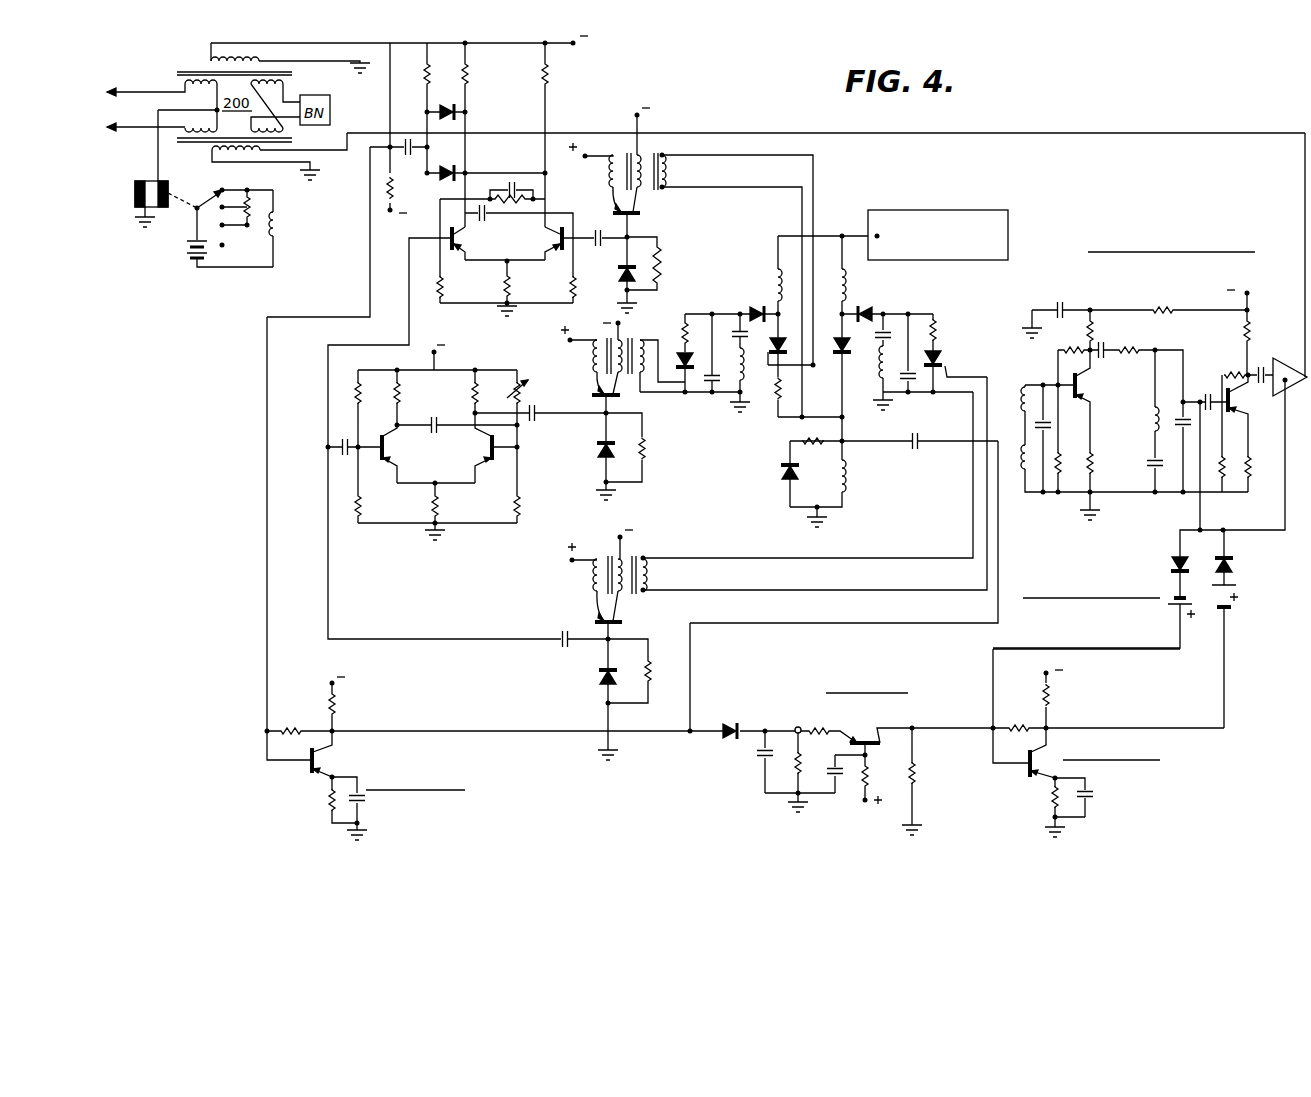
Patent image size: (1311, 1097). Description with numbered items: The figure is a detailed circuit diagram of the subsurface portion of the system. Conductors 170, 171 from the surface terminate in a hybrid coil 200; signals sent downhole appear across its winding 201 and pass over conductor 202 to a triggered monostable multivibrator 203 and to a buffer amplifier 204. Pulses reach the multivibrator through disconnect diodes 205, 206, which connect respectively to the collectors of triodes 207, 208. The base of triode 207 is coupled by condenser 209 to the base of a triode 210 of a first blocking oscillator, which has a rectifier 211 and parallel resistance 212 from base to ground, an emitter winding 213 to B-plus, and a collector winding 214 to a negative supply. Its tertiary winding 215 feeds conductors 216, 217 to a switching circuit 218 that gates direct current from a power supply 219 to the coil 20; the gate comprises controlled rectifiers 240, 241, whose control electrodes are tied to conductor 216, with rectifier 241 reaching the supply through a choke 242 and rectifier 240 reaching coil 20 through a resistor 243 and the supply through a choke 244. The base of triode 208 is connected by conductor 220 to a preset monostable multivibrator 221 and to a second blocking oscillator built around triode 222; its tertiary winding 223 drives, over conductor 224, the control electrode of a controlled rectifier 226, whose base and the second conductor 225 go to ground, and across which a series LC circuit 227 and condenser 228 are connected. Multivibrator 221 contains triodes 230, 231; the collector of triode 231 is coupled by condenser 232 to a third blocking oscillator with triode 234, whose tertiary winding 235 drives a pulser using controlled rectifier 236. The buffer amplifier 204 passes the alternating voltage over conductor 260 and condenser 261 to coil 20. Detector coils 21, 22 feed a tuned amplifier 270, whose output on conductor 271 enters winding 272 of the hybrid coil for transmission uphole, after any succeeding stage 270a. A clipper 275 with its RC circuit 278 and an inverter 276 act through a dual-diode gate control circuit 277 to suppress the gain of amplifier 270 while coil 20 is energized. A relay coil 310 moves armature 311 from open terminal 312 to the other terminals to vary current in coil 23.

The winding 201 is at (211, 53).
The conductor 170 is at (128, 92).
The conductor 171 is at (126, 129).
The hybrid coil 200 is at (229, 107).
The conductor 202 is at (390, 103).
The winding 272 is at (229, 163).
The relay coil 310 is at (136, 184).
The armature 311 is at (197, 211).
The open circuit terminal 312 is at (225, 246).
The coil 23 is at (281, 225).
The disconnect diode 206 is at (466, 106).
The disconnect diode 205 is at (453, 182).
The triggered monostable multivibrator 203 is at (523, 246).
The triode 208 is at (456, 253).
The triode 207 is at (556, 254).
The condenser 209 is at (597, 226).
The conductor 220 is at (410, 325).
The winding 213 is at (609, 177).
The winding 214 is at (650, 164).
The tertiary winding 215 is at (670, 171).
The conductor 216 is at (746, 157).
The conductor 217 is at (733, 188).
The triode 210 is at (642, 214).
The rectifier 211 is at (641, 282).
The resistance 212 is at (660, 263).
The switching circuit 218 is at (776, 206).
The power supply 219 is at (943, 211).
The choke 244 is at (772, 291).
The choke 242 is at (846, 289).
The triode 234 is at (621, 397).
The condenser 232 is at (536, 404).
The tertiary winding 235 is at (641, 339).
The controlled rectifier 236 is at (687, 352).
The controlled rectifier 241 is at (831, 354).
The resistor 243 is at (776, 394).
The controlled rectifier 240 is at (791, 357).
The coil 20 is at (848, 481).
The series LC circuit 227 is at (880, 341).
The condenser 228 is at (912, 338).
The controlled rectifier 226 is at (944, 361).
The condenser 261 is at (920, 440).
The conductor 260 is at (885, 624).
The conductor 224 is at (886, 559).
The conductor 225 is at (884, 592).
The preset monostable multivibrator 221 is at (452, 463).
The triode 230 is at (384, 462).
The triode 231 is at (489, 463).
The tertiary winding 223 is at (649, 578).
The triode 222 is at (623, 622).
The buffer amplifier 204 is at (318, 717).
The clipper 275 is at (877, 717).
The RC circuit 278 is at (778, 780).
The inverter 276 is at (1035, 716).
The dual-diode gate control circuit 277 is at (1238, 587).
The tuned amplifier 270 is at (1138, 438).
The detector coil 21 is at (1020, 390).
The detector coil 22 is at (1021, 450).
The succeeding stage 270a is at (1296, 373).
The conductor 271 is at (1305, 281).